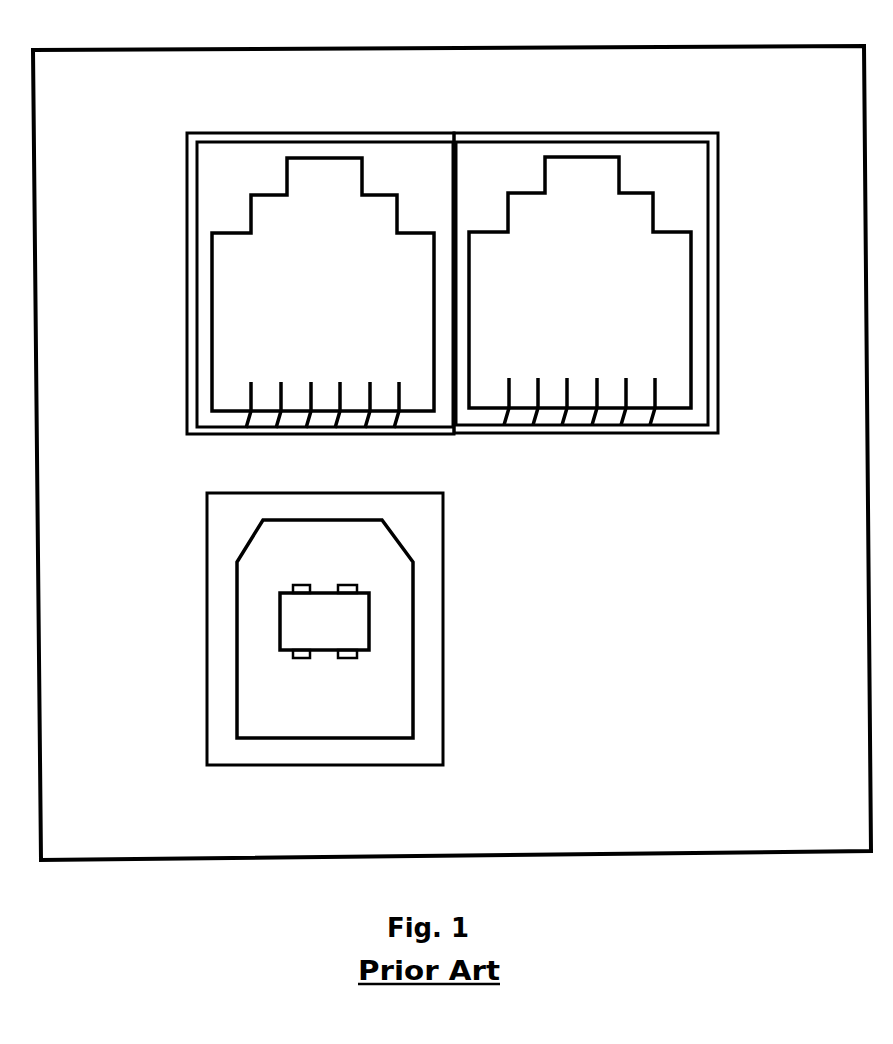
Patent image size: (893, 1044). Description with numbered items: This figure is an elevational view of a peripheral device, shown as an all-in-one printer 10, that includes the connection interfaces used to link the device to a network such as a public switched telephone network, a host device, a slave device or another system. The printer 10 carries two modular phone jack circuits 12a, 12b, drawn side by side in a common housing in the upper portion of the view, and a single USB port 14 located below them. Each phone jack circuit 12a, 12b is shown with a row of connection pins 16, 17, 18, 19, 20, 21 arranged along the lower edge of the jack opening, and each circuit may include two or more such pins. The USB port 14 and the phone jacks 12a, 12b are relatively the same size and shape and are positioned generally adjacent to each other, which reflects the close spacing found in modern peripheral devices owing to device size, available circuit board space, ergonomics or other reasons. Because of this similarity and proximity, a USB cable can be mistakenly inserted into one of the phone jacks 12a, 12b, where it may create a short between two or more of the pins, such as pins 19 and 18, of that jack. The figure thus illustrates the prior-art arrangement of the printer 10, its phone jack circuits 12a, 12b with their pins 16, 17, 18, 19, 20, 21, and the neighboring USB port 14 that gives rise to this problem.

The all-in-one printer 10 is at (330, 48).
The RJ-11 phone jack circuit 12a is at (265, 133).
The RJ-11 phone jack circuit 12b is at (555, 133).
The USB port 14 is at (443, 613).
The connection pin 16 is at (251, 395).
The connection pin 17 is at (281, 395).
The connection pin 18 is at (310, 393).
The connection pin 19 is at (340, 394).
The connection pin 20 is at (370, 393).
The connection pin 21 is at (399, 394).